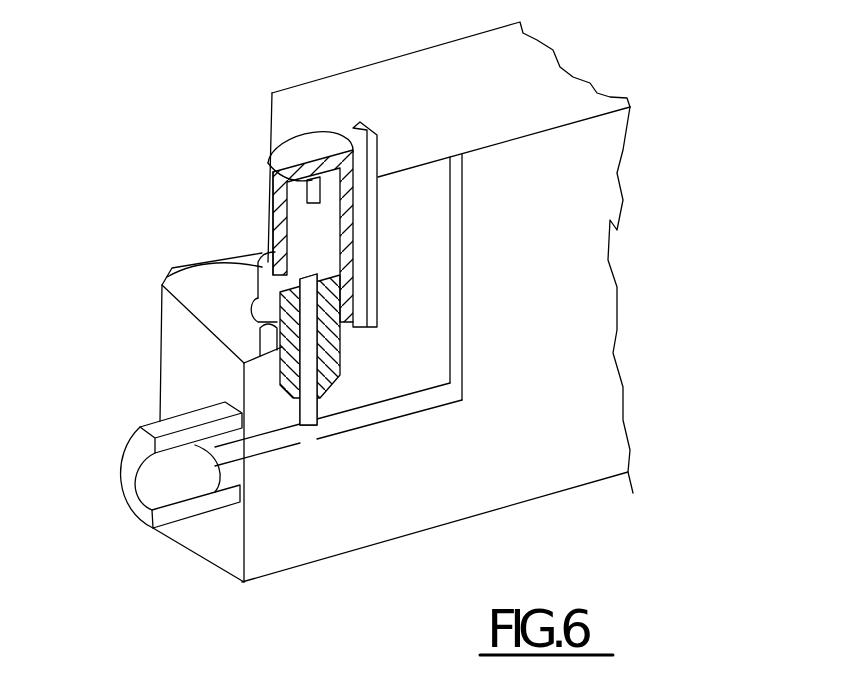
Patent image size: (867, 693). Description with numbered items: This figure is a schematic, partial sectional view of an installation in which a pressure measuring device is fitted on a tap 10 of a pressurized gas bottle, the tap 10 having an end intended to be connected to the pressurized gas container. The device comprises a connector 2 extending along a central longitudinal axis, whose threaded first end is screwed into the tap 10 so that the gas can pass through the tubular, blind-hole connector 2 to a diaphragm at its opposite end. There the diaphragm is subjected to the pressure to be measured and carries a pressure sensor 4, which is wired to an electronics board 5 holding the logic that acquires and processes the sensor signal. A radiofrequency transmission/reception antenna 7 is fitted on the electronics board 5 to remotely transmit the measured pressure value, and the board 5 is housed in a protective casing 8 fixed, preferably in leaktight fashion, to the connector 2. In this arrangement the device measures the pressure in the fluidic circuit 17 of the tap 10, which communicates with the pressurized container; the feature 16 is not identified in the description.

The connector 2 is at (297, 372).
The pressure sensor 4 is at (262, 252).
The electronics board 5 is at (300, 233).
The transmission/reception antenna 7 is at (313, 178).
The protective casing 8 is at (283, 185).
The tap 10 is at (267, 552).
The bore 16 is at (160, 484).
The fluidic circuit 17 is at (392, 410).